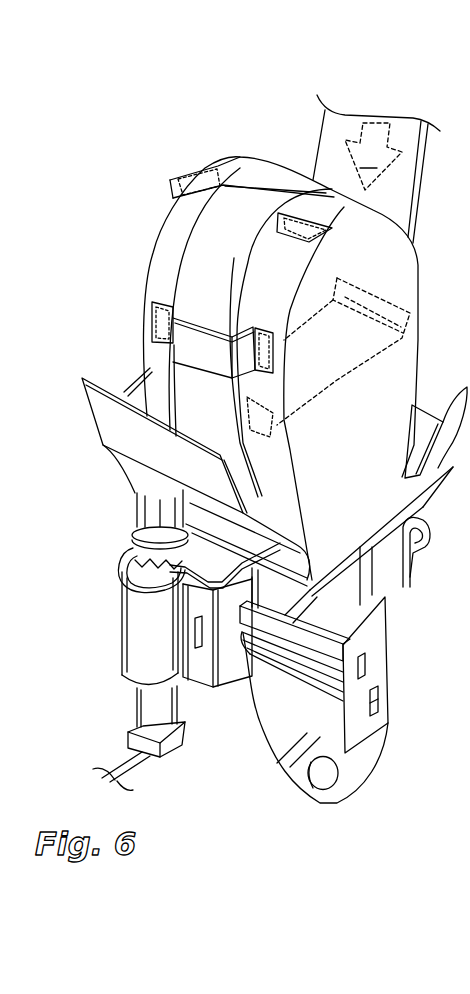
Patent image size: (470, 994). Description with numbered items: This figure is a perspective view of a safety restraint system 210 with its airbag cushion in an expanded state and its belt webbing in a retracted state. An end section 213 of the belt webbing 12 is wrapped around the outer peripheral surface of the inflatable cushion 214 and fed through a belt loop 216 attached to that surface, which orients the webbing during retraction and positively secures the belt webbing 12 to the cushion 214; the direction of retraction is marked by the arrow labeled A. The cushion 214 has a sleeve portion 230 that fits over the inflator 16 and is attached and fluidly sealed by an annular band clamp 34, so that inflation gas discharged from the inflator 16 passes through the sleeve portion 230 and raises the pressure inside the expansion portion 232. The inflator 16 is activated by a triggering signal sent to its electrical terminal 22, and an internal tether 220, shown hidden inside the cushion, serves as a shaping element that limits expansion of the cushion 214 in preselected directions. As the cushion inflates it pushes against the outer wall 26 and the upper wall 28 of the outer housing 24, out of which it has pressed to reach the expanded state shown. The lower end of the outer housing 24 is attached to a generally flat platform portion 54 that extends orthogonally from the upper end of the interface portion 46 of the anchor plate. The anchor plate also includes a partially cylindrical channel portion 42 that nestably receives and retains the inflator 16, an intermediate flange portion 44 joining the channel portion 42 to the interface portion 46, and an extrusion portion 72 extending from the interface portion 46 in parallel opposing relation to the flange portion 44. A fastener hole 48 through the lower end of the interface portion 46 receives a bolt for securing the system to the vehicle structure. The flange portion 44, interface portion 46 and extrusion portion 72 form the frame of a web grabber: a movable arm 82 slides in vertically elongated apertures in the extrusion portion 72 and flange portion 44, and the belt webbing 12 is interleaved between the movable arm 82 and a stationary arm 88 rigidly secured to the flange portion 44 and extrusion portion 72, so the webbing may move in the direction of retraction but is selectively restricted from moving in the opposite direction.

The safety restraint system 210 is at (256, 440).
The inflatable cushion 214 is at (147, 252).
The belt webbing end section 213 is at (196, 236).
The belt webbing 12 is at (417, 183).
The expansion portion 232 is at (150, 305).
The belt loop 216 is at (191, 337).
The internal tether 220 is at (338, 381).
The outer housing 24 is at (134, 379).
The upper wall 28 is at (105, 420).
The outer wall 26 is at (290, 542).
The platform portion 54 is at (378, 548).
The sleeve portion 230 is at (148, 523).
The annular band clamp 34 is at (138, 555).
The channel portion 42 is at (147, 615).
The inflator 16 is at (148, 700).
The electrical terminal 22 is at (175, 745).
The flange portion 44 is at (225, 663).
The stationary arm 88 is at (327, 645).
The movable arm 82 is at (242, 668).
The interface portion 46 is at (280, 739).
The fastener hole 48 is at (310, 770).
The extrusion portion 72 is at (380, 660).